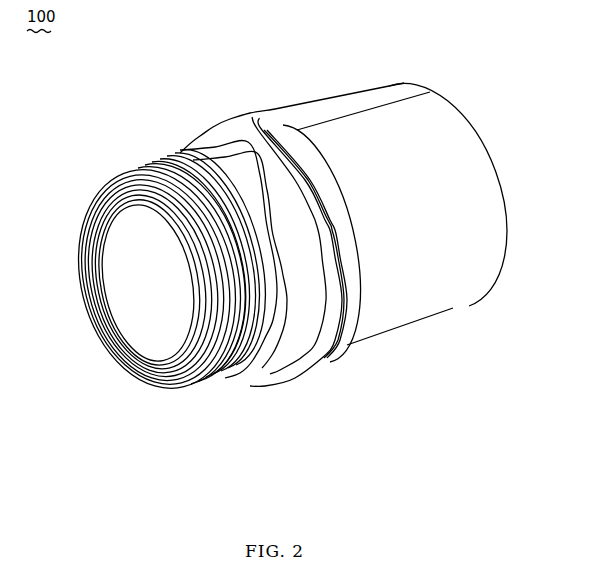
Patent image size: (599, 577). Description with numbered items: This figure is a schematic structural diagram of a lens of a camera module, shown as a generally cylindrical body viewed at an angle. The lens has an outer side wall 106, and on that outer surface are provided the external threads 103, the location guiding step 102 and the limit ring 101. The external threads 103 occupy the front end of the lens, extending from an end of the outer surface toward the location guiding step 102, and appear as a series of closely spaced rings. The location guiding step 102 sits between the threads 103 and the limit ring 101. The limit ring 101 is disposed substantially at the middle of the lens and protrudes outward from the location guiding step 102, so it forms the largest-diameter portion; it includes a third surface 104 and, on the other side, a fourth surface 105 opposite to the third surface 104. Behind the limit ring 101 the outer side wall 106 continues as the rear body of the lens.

The limit ring 101 is at (353, 250).
The location guiding step 102 is at (308, 303).
The external threads 103 is at (233, 327).
The third surface 104 is at (222, 132).
The fourth surface 105 is at (260, 108).
The outer side wall 106 is at (423, 108).